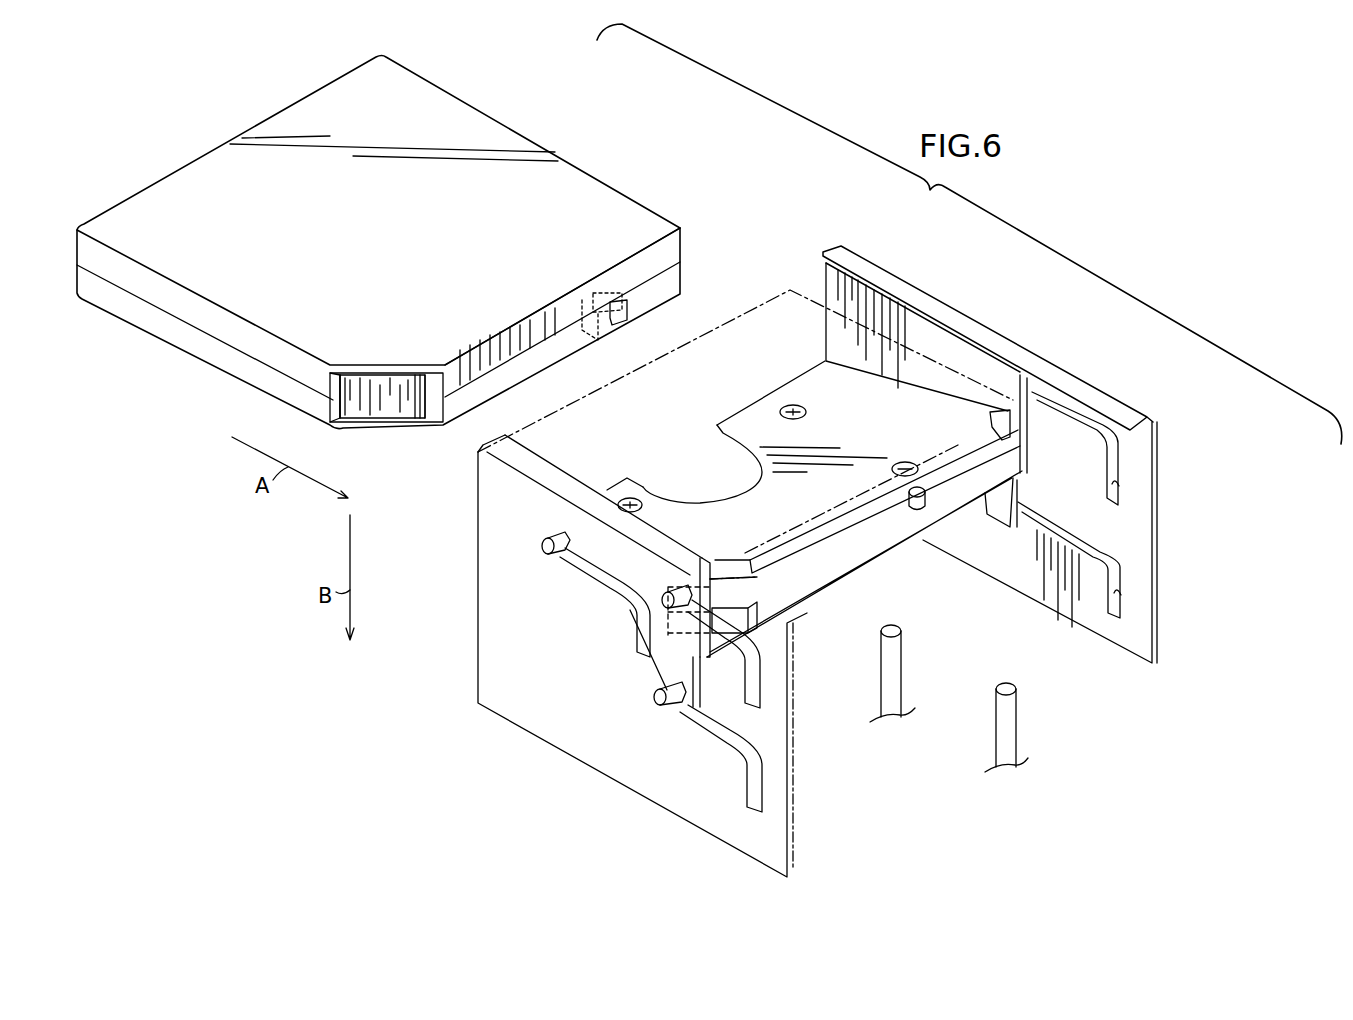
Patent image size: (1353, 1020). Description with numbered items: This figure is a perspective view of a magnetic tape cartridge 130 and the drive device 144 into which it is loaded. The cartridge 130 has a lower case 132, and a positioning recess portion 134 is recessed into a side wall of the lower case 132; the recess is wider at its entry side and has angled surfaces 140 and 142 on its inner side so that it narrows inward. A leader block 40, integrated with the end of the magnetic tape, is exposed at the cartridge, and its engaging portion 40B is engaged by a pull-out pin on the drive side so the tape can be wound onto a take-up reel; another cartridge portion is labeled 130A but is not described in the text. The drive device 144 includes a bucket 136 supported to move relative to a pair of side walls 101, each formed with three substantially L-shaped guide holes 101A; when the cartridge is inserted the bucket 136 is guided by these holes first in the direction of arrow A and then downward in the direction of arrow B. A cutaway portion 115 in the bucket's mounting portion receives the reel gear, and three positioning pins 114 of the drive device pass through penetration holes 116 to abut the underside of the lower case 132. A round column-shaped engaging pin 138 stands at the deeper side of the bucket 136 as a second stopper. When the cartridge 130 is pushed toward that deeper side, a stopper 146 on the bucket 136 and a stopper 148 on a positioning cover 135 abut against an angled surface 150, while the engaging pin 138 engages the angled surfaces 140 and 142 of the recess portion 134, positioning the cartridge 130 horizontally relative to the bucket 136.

The magnetic tape cartridge 130 is at (587, 130).
The lower case 132 is at (677, 278).
The positioning recess portion 134 is at (618, 316).
The positioning cover 135 is at (760, 303).
The bucket 136 is at (902, 553).
The engaging pin 138 is at (927, 497).
The angled surface 140 is at (590, 300).
The angled surface 142 is at (582, 307).
The drive device 144 is at (1017, 322).
The stopper 146 is at (747, 602).
The stopper 148 is at (723, 563).
The angled surface 150 is at (378, 371).
The cartridge front face 130A is at (347, 407).
The leader block 40 is at (365, 410).
The engaging portion 40B is at (415, 408).
The side walls 101 is at (600, 762).
The guide holes 101A is at (633, 608).
The positioning pins 114 is at (895, 690).
The cutaway portion 115 is at (717, 434).
The penetration holes 116 is at (802, 407).